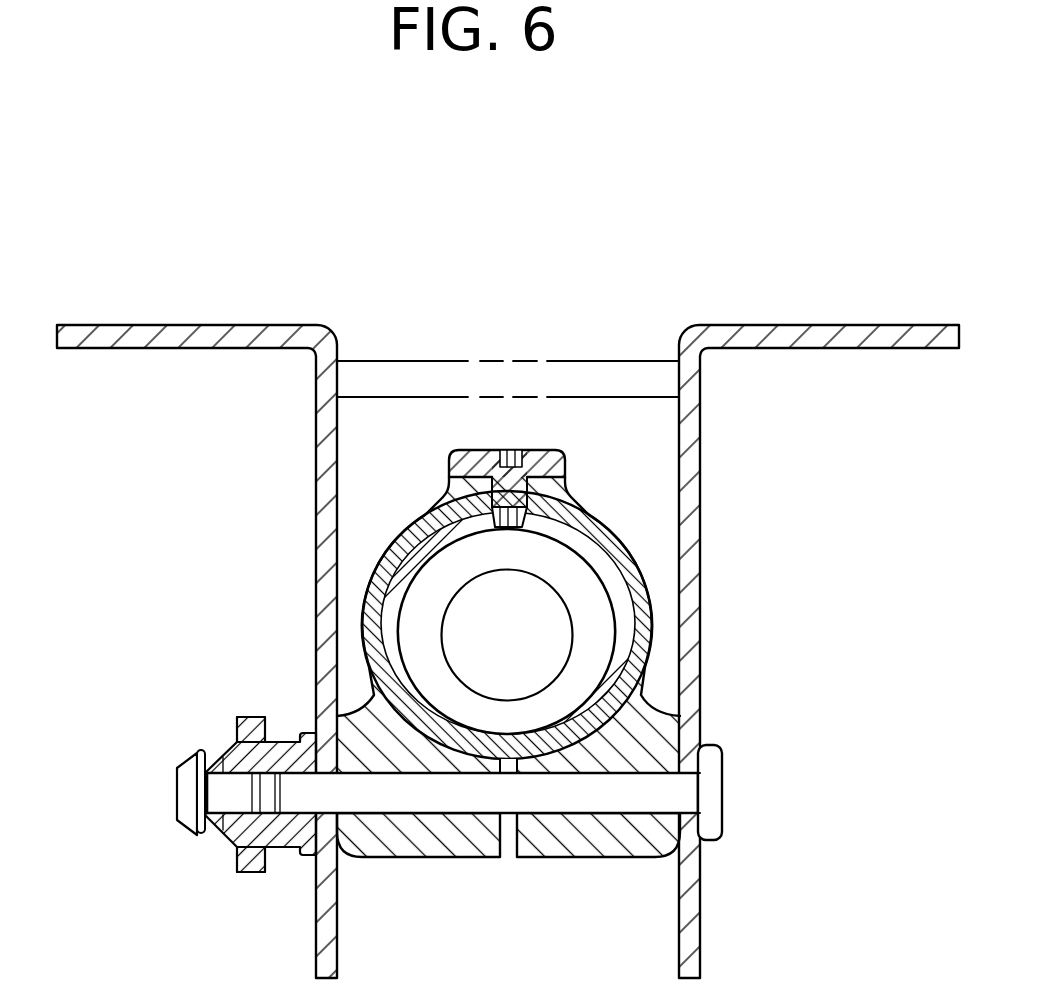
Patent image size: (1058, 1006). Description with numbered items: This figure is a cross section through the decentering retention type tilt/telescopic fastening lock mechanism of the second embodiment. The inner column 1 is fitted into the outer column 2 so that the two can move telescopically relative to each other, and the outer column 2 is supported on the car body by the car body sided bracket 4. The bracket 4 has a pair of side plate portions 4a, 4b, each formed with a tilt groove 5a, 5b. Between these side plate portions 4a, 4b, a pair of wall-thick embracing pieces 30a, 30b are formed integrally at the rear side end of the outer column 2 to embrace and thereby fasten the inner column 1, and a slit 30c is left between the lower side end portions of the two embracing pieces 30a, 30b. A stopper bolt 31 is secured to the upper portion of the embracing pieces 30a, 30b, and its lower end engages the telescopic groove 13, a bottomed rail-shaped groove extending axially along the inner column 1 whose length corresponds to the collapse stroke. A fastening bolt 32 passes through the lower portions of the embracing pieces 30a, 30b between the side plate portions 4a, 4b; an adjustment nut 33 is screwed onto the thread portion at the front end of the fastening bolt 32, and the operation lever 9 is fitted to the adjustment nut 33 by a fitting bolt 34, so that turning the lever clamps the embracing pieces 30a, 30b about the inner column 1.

The inner column 1 is at (437, 507).
The outer column 2 is at (583, 492).
The car body sided bracket 4 is at (779, 313).
The side plate portion 4a is at (317, 425).
The side plate portion 4b is at (702, 417).
The tilt groove 5a is at (316, 733).
The tilt groove 5b is at (682, 693).
The operation lever 9 is at (250, 873).
The telescopic groove 13 is at (495, 512).
The embracing piece 30a is at (400, 860).
The embracing piece 30b is at (603, 860).
The slit 30c is at (506, 852).
The stopper bolt 31 is at (540, 455).
The fastening bolt 32 is at (723, 792).
The adjustment nut 33 is at (292, 845).
The fitting bolt 34 is at (177, 790).